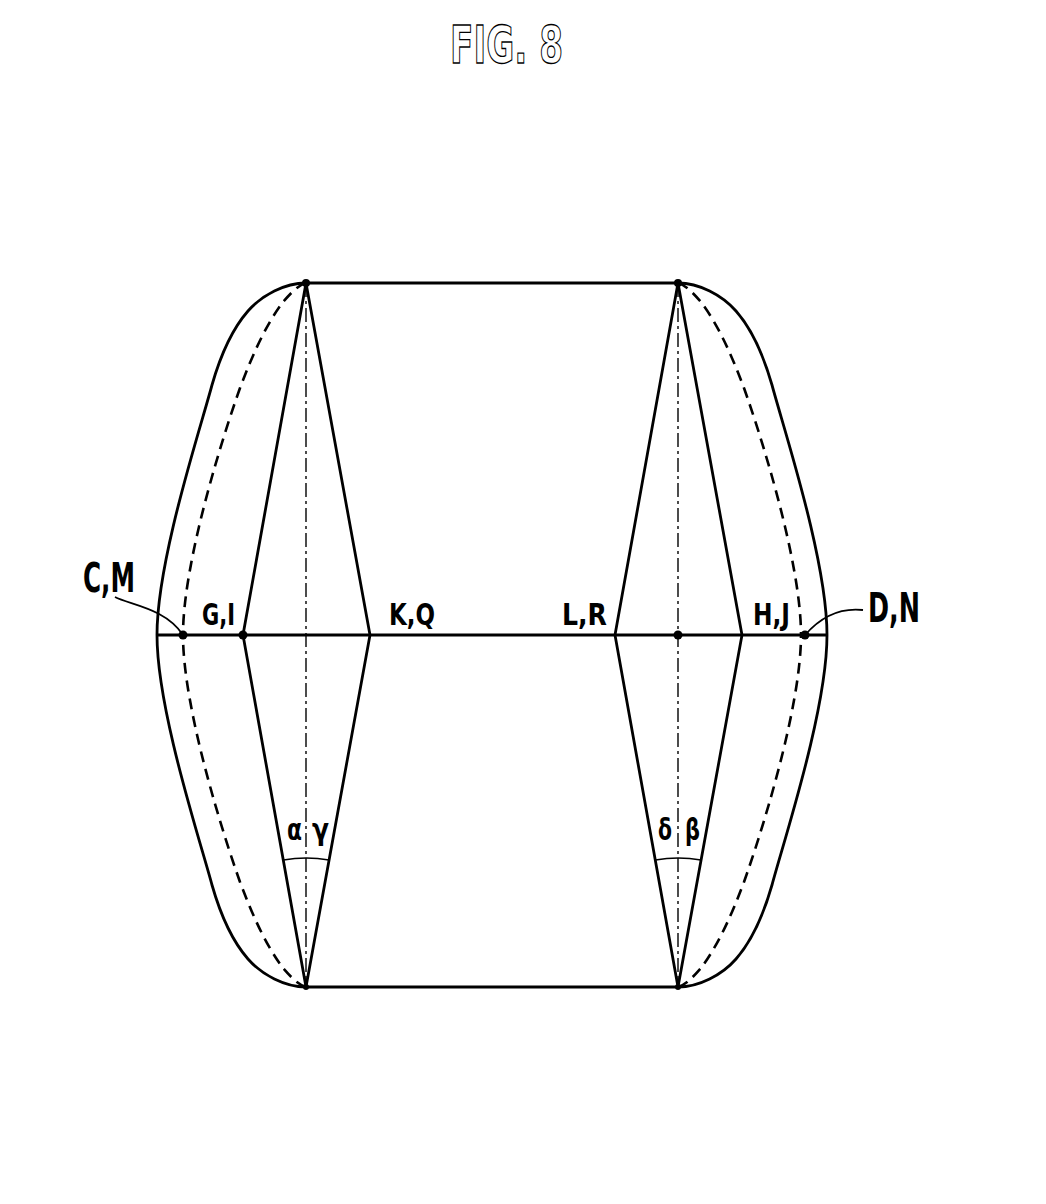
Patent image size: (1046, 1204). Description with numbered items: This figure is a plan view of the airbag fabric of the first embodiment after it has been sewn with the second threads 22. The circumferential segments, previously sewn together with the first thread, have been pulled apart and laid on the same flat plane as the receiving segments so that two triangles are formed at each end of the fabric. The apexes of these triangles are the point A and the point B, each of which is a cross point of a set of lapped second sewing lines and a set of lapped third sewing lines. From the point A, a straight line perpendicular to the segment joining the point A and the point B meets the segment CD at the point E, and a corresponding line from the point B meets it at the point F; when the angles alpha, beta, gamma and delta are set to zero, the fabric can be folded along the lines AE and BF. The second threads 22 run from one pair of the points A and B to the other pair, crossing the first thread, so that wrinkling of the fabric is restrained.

The second threads 22 is at (235, 402).
The point A is at (306, 636).
The point B is at (678, 636).
The point E is at (294, 635).
The point F is at (691, 635).